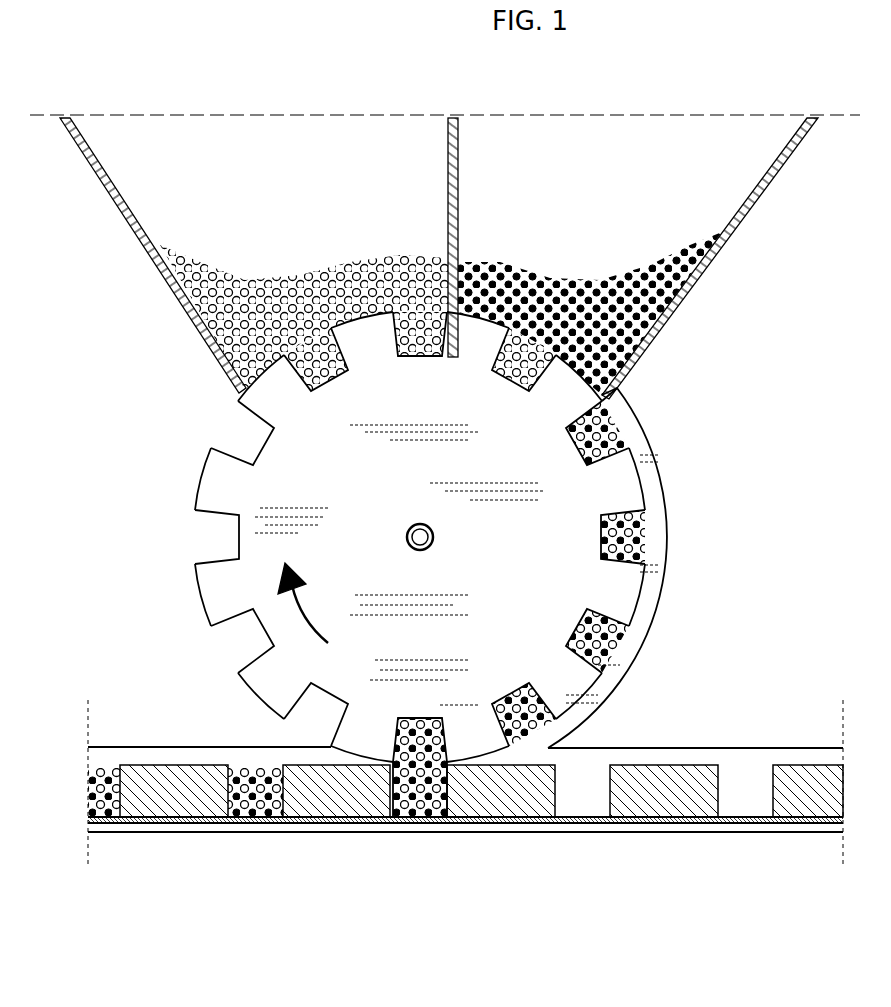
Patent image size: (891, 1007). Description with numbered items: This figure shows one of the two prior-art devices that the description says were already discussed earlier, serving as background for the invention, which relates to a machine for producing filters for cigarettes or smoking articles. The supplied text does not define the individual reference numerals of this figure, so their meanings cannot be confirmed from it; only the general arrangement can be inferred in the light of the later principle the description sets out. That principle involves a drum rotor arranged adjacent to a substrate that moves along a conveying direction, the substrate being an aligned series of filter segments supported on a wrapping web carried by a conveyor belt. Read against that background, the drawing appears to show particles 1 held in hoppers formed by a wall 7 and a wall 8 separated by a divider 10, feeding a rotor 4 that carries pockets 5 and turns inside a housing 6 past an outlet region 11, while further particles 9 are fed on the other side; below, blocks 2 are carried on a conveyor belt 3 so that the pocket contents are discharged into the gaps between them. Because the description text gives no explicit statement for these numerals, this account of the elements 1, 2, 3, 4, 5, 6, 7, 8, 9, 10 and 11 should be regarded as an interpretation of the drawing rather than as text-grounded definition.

The first particles 1 is at (300, 283).
The substrate blocks 2 is at (830, 805).
The conveyor belt 3 is at (580, 823).
The rotor 4 is at (350, 565).
The pockets 5 is at (258, 418).
The housing 6 is at (652, 590).
The left hopper wall 7 is at (128, 220).
The right hopper wall 8 is at (752, 207).
The second particles 9 is at (605, 290).
The divider wall 10 is at (462, 166).
The outlet gap 11 is at (572, 386).